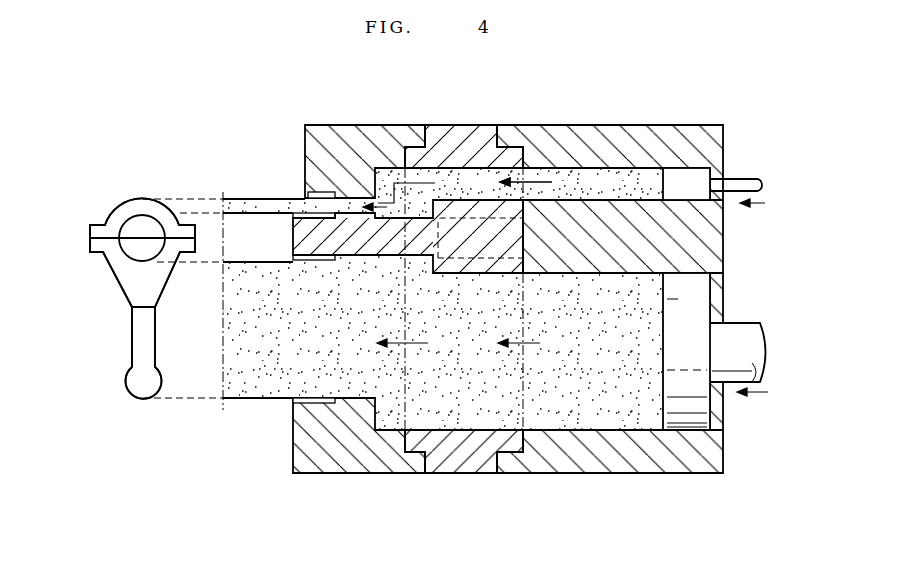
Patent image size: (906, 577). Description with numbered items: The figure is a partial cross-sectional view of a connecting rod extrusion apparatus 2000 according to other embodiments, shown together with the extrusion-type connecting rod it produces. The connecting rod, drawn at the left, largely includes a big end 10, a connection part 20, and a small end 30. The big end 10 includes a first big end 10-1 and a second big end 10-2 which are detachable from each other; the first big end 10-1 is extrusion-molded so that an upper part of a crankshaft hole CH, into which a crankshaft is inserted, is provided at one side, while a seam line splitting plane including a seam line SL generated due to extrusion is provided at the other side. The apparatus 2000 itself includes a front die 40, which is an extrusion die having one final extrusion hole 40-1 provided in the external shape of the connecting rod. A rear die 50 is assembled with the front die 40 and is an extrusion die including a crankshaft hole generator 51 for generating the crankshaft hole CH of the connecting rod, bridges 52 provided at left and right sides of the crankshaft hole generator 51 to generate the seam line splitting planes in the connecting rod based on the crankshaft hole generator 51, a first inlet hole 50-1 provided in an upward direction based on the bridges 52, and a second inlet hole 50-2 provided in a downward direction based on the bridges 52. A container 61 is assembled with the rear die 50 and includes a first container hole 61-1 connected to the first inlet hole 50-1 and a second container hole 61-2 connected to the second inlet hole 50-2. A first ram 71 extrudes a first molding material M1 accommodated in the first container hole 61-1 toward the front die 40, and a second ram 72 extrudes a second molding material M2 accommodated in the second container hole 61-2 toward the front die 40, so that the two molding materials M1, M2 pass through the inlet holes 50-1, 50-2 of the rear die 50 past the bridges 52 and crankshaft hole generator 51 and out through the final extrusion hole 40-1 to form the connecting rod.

The connecting rod extrusion apparatus 2000 is at (680, 56).
The big end 10 is at (208, 134).
The first big end 10-1 is at (188, 227).
The second big end 10-2 is at (187, 245).
The seam line SL is at (103, 223).
The crankshaft hole CH is at (163, 222).
The connection part 20 is at (152, 345).
The small end 30 is at (142, 388).
The front die 40 is at (353, 132).
The final extrusion hole 40-1 is at (350, 397).
The rear die 50 is at (466, 132).
The first inlet hole 50-1 is at (553, 182).
The second inlet hole 50-2 is at (502, 430).
The crankshaft hole generator 51 is at (300, 238).
The bridge 52 is at (462, 218).
The container 61 is at (620, 178).
The first container hole 61-1 is at (624, 180).
The second container hole 61-2 is at (648, 430).
The first ram 71 is at (742, 183).
The second ram 72 is at (742, 328).
The first molding material M1 is at (583, 188).
The second molding material M2 is at (600, 395).